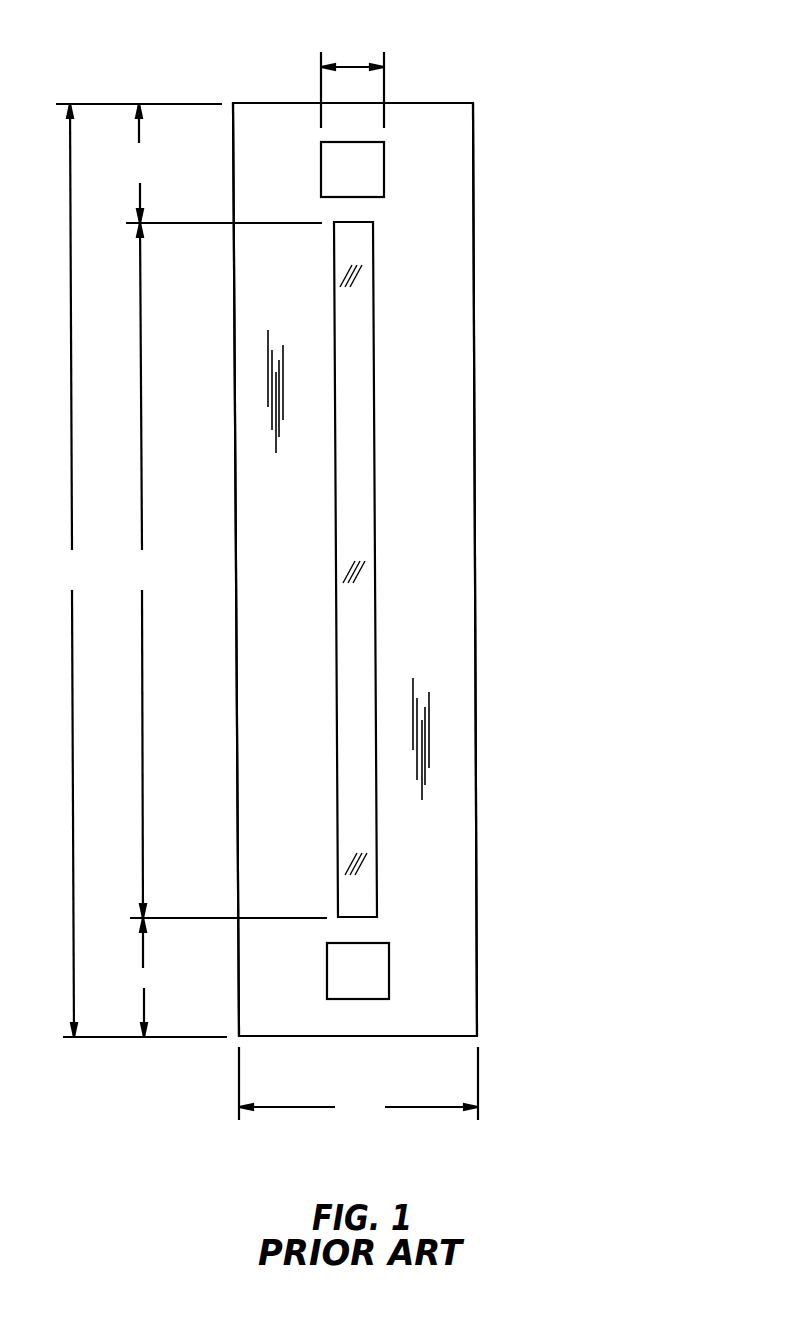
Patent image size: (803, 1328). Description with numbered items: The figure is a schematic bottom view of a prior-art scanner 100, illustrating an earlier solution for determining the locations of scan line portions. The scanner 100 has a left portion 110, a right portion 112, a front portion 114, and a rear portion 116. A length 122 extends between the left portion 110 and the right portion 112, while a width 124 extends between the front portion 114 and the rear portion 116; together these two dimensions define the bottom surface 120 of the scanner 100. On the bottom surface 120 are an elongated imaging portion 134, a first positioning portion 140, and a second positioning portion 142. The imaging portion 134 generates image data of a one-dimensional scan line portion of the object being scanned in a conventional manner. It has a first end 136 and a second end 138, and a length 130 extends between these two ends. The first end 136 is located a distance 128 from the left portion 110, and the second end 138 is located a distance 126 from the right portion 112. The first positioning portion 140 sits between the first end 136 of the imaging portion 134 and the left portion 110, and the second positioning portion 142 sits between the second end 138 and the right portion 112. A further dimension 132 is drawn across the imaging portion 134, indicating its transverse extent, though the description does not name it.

The scanner 100 is at (583, 69).
The left portion 110 is at (428, 103).
The right portion 112 is at (357, 1037).
The front portion 114 is at (475, 568).
The rear portion 116 is at (233, 578).
The bottom surface 120 is at (440, 500).
The length 122 is at (72, 570).
The width 124 is at (358, 1085).
The distance 126 is at (144, 977).
The distance 128 is at (138, 163).
The length 130 is at (141, 570).
The bar width 132 is at (352, 60).
The imaging portion 134 is at (358, 411).
The first end 136 is at (353, 222).
The second end 138 is at (358, 917).
The first positioning portion 140 is at (360, 169).
The second positioning portion 142 is at (365, 970).